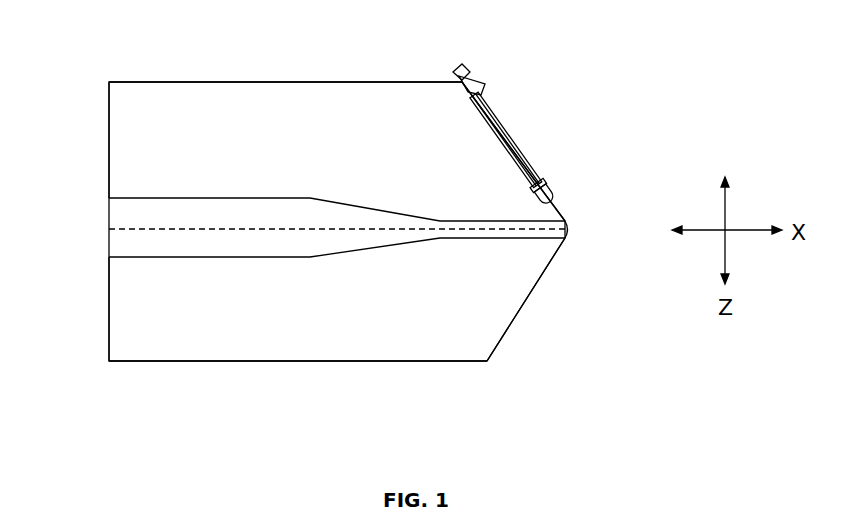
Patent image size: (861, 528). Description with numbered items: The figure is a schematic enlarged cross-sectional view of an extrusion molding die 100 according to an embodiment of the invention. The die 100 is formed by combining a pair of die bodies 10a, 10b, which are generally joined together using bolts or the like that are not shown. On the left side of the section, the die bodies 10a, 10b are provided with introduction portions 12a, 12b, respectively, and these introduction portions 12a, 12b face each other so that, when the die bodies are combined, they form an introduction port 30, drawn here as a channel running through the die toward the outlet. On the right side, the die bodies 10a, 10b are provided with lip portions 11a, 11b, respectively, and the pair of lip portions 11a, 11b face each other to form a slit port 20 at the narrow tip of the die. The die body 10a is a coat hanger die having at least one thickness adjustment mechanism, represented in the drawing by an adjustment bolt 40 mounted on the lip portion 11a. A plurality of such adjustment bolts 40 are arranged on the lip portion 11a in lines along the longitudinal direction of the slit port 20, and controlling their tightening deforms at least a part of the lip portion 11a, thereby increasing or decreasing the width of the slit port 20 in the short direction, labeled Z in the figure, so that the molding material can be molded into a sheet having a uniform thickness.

The die 100 is at (359, 457).
The die body 10a is at (283, 98).
The die body 10b is at (283, 333).
The introduction portion 12a is at (130, 141).
The introduction portion 12b is at (130, 310).
The lip portion 11a is at (552, 212).
The lip portion 11b is at (556, 262).
The introduction port 30 is at (108, 229).
The slit port 20 is at (570, 229).
The adjustment bolt 40 is at (502, 126).